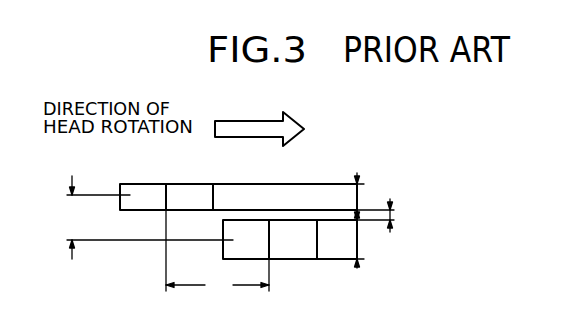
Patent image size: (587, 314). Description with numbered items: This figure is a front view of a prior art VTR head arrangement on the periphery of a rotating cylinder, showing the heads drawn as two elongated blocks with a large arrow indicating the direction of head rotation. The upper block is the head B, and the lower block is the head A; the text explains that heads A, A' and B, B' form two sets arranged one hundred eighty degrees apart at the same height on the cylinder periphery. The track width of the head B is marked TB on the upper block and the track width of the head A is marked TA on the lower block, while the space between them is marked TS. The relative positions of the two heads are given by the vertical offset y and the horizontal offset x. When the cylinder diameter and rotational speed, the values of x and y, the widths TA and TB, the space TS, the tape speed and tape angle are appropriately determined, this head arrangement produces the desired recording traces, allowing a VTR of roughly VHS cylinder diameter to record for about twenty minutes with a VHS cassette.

The head B is at (140, 184).
The head A is at (278, 259).
The vertical offset y is at (150, 217).
The horizontal offset x is at (217, 253).
The track width TB is at (362, 197).
The track width TA is at (369, 239).
The space TS is at (388, 215).